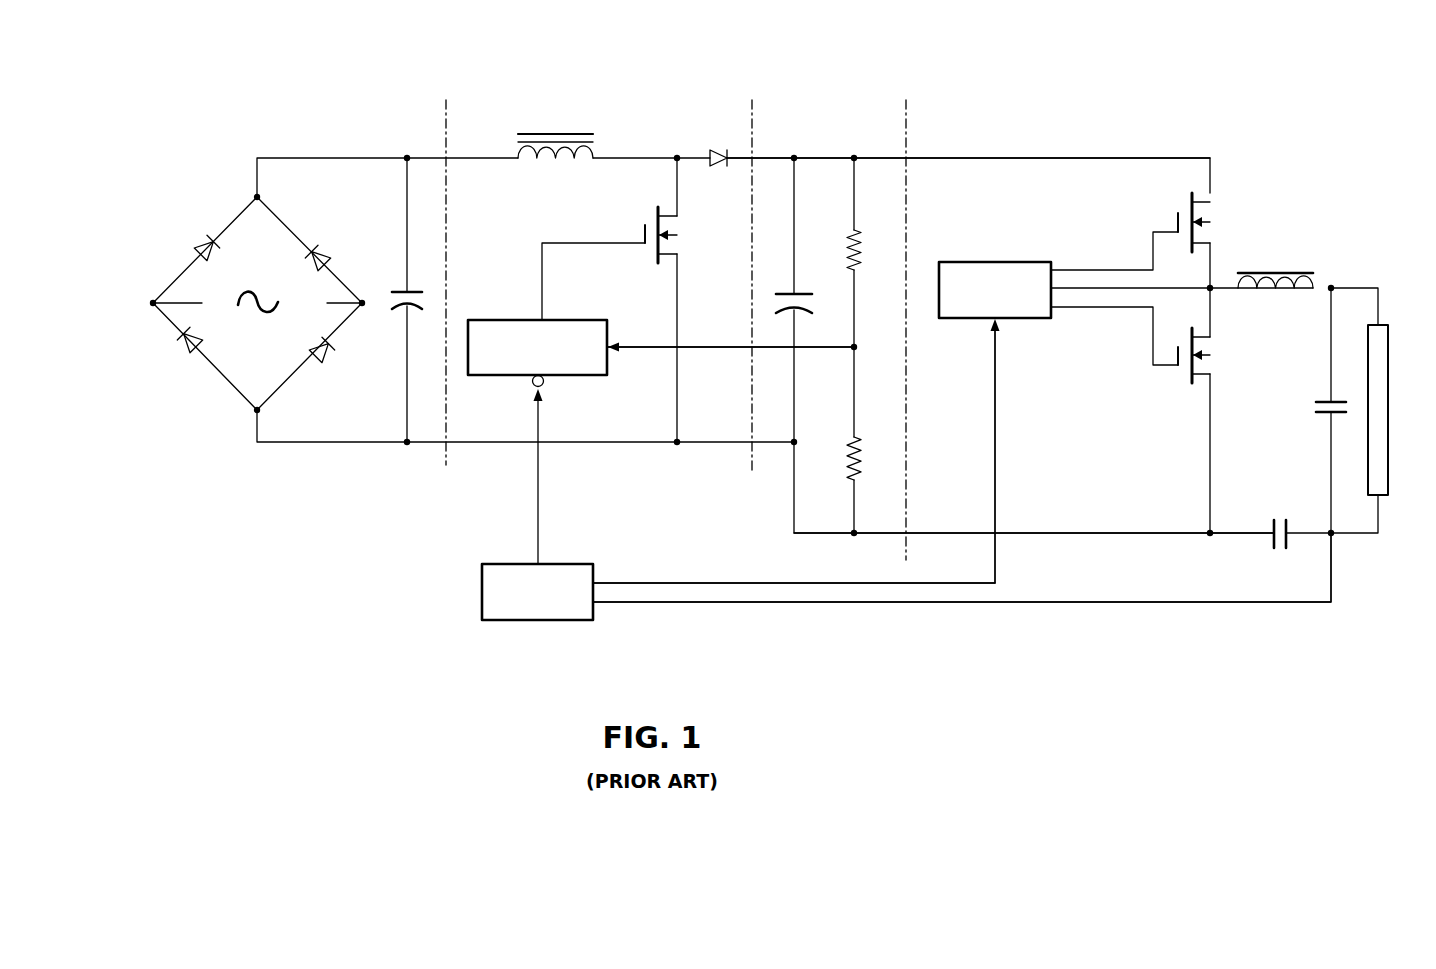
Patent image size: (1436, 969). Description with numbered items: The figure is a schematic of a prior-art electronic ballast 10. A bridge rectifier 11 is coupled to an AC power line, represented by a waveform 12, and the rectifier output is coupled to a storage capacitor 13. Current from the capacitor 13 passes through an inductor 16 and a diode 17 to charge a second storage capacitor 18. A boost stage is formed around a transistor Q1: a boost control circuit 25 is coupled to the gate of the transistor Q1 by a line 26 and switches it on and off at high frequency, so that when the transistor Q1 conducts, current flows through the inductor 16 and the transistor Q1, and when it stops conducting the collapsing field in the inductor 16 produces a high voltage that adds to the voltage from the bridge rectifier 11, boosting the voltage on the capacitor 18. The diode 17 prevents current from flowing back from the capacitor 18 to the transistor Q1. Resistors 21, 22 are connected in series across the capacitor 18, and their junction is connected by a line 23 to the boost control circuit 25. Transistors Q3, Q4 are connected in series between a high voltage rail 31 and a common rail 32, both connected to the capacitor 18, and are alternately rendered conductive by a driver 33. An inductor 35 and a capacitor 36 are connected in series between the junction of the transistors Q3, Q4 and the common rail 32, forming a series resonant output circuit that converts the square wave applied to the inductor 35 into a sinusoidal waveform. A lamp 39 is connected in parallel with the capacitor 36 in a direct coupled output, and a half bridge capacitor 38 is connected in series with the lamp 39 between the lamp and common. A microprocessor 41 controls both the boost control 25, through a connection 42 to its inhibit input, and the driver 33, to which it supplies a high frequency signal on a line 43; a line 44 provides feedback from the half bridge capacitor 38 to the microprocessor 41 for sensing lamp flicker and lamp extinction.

The ballast 10 is at (293, 92).
The bridge rectifier 11 is at (185, 366).
The waveform 12 is at (269, 323).
The storage capacitor 13 is at (402, 288).
The inductor 16 is at (549, 133).
The diode 17 is at (724, 150).
The storage capacitor 18 is at (805, 290).
The resistor 21 is at (866, 253).
The resistor 22 is at (877, 451).
The line 23 is at (683, 347).
The boost control circuit 25 is at (528, 320).
The line 26 is at (585, 243).
The rail 31 is at (1117, 157).
The common rail 32 is at (1117, 532).
The driver 33 is at (1010, 262).
The inductor 35 is at (1290, 270).
The capacitor 36 is at (1320, 414).
The half bridge capacitor 38 is at (1280, 519).
The lamp 39 is at (1389, 370).
The microprocessor 41 is at (515, 564).
The control signal line 42 is at (540, 503).
The line 43 is at (712, 583).
The line 44 is at (712, 603).
The transistor Q1 is at (679, 235).
The transistor Q3 is at (1155, 240).
The transistor Q4 is at (1155, 346).